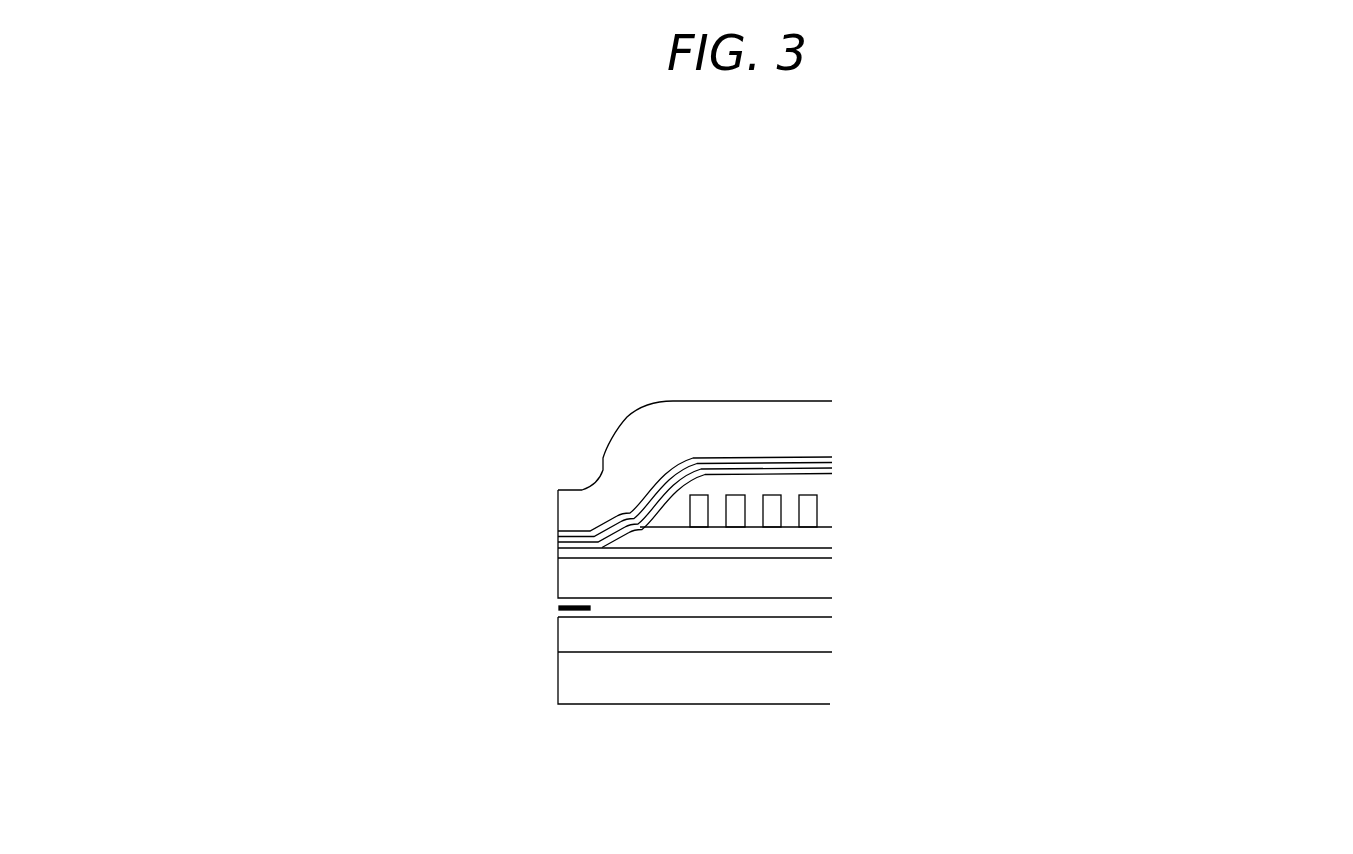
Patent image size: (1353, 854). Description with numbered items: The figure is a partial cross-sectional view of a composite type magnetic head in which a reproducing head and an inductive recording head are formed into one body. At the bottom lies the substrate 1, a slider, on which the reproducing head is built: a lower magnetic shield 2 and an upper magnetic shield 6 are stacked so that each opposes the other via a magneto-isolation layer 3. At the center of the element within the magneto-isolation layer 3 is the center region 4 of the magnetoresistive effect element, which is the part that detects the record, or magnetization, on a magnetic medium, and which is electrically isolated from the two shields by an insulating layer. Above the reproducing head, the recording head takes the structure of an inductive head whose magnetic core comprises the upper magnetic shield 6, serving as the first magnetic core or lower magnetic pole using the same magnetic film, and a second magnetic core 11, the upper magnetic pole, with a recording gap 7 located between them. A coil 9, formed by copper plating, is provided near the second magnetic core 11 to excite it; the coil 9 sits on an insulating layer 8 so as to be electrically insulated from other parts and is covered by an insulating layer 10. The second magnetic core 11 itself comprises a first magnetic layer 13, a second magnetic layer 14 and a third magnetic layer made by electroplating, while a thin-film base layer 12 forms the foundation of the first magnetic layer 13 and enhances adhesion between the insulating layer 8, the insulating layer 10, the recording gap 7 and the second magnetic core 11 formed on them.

The substrate 1 is at (805, 675).
The lower magnetic shield 2 is at (577, 631).
The magnetism-isolation layer 3 is at (717, 608).
The center region of the magnetoresistive effect element 4 is at (557, 608).
The upper magnetic shield 6 is at (793, 582).
The recording gap 7 is at (568, 553).
The insulating layer 8 is at (638, 537).
The coil 9 is at (693, 507).
The insulating layer 10 is at (725, 480).
The second magnetic core 11 is at (678, 422).
The base layer 12 is at (833, 472).
The first magnetic layer 13 is at (833, 469).
The second magnetic layer 14 is at (833, 458).